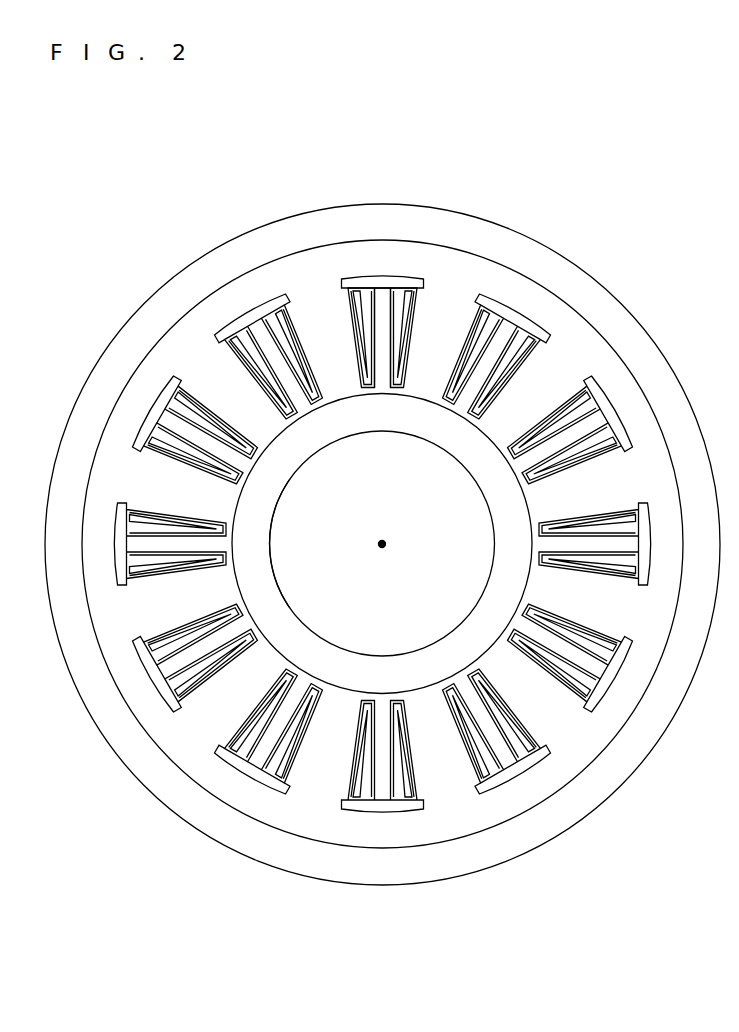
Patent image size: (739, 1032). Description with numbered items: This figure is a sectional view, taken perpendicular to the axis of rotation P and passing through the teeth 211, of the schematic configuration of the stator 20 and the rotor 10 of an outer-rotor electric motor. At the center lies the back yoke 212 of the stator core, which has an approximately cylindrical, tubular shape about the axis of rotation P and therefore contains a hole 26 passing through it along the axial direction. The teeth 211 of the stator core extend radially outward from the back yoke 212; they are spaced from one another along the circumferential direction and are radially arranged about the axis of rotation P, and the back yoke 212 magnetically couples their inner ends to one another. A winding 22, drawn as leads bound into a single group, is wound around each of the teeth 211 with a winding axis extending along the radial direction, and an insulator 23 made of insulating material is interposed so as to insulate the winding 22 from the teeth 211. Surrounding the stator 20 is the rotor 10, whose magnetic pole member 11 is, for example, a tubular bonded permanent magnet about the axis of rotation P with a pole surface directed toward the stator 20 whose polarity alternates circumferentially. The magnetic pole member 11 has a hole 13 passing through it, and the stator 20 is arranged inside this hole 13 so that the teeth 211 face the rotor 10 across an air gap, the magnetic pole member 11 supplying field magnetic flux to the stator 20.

The rotor 10 is at (497, 212).
The magnetic pole member 11 is at (248, 242).
The hole 13 is at (198, 306).
The stator 20 is at (545, 317).
The teeth 211 is at (385, 275).
The back yoke 212 is at (387, 432).
The winding 22 is at (409, 279).
The insulator 23 is at (353, 276).
The hole 26 is at (290, 489).
The axis of rotation P is at (371, 544).